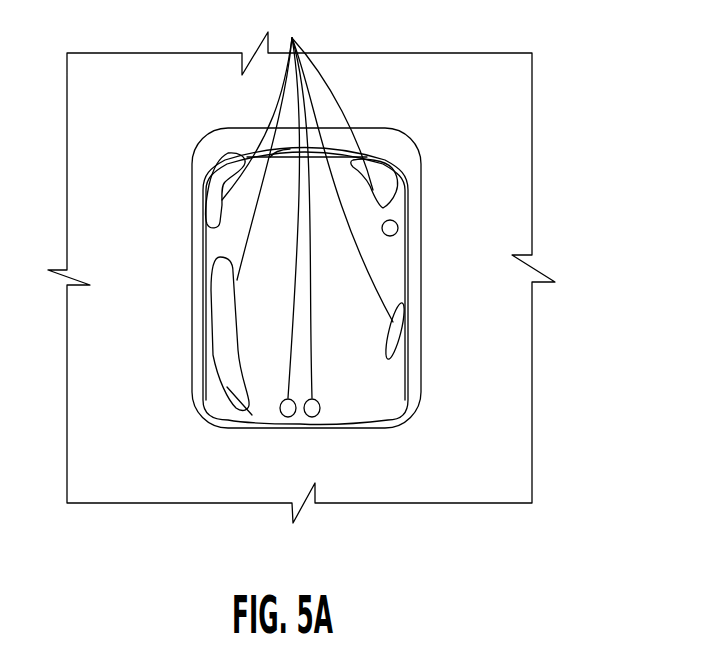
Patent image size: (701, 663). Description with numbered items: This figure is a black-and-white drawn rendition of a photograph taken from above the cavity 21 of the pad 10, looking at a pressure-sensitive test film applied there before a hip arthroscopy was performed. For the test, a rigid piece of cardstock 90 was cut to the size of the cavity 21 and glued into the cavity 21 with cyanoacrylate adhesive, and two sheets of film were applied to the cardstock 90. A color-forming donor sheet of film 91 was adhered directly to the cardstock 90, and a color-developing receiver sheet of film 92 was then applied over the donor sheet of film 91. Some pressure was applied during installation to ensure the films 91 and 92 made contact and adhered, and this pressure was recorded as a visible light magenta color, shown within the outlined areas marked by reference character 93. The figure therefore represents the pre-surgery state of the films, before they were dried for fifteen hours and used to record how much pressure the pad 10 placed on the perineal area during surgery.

The pad 10 is at (147, 390).
The cavity 21 is at (178, 208).
The cardstock 90 is at (407, 420).
The donor sheet of film 91 is at (223, 412).
The receiver sheet of film 92 is at (215, 402).
The outlined areas of recorded pressure 93 is at (307, 211).